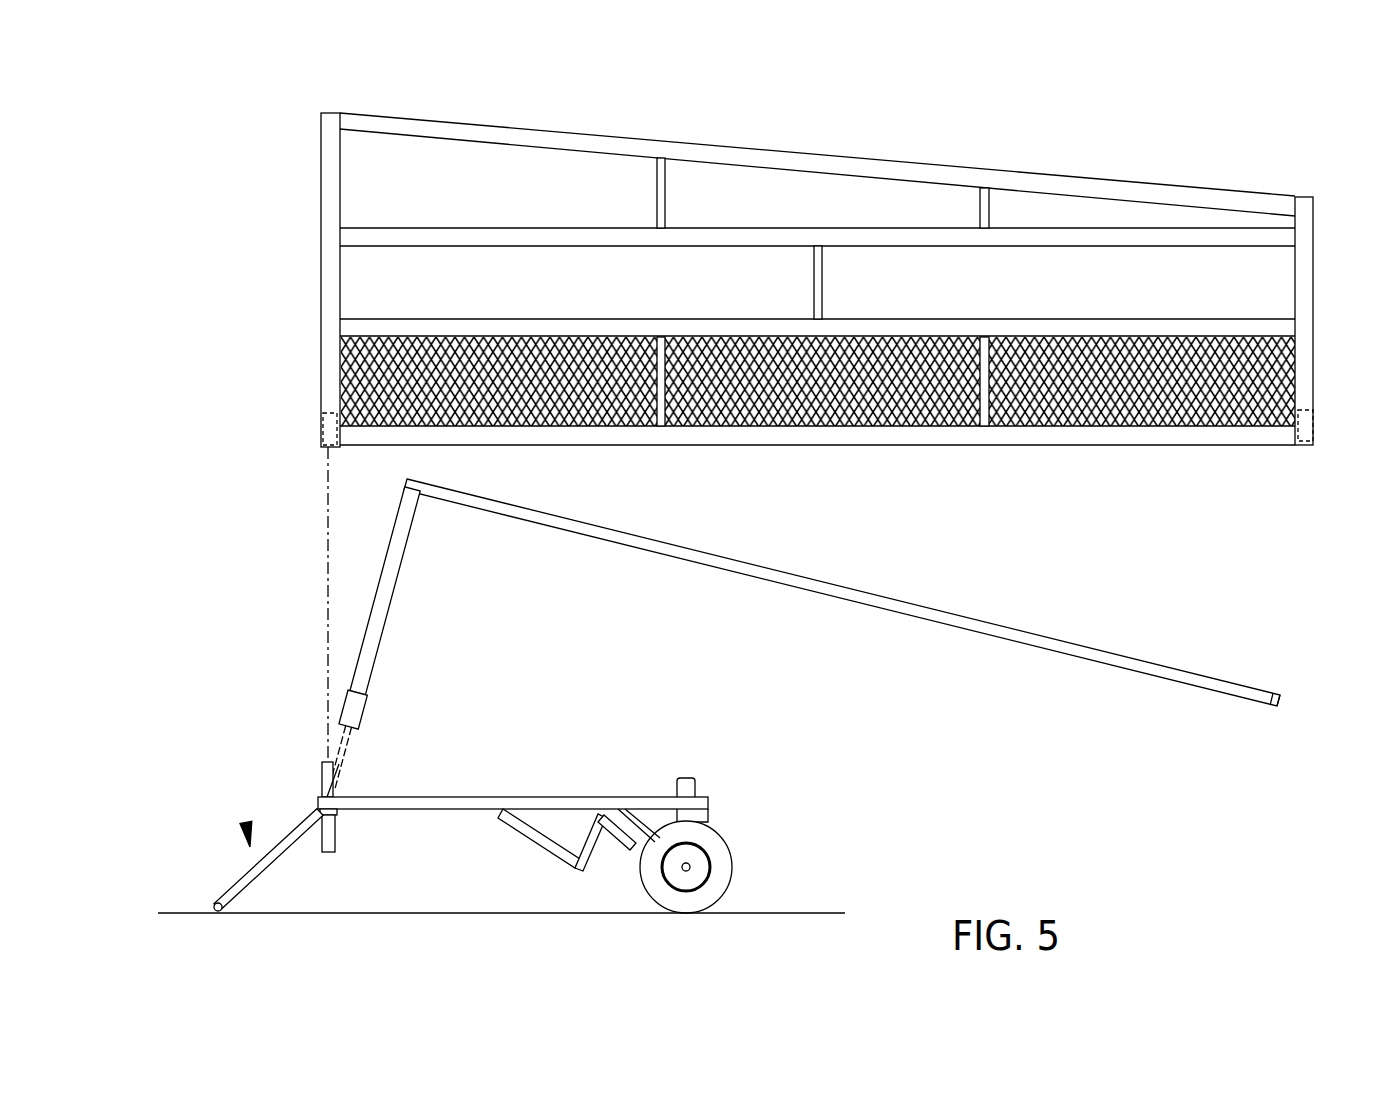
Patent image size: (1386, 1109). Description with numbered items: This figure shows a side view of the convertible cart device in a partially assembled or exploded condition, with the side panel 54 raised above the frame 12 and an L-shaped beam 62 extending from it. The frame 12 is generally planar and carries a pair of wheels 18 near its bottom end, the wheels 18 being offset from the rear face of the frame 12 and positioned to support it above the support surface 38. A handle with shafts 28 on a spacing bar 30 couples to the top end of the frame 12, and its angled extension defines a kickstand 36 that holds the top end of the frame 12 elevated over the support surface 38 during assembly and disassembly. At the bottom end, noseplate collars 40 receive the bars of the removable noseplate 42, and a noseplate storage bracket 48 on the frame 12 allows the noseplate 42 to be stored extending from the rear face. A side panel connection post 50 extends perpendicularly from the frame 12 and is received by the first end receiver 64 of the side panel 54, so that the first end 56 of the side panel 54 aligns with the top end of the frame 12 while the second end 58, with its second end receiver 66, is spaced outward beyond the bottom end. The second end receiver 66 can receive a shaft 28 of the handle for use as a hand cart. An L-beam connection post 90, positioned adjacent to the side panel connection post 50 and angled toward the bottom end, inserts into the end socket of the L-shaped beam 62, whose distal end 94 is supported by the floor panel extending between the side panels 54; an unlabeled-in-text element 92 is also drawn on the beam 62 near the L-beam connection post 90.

The frame 12 is at (562, 797).
The wheels 18 is at (733, 878).
The shafts 28 is at (340, 835).
The spacing bar 30 is at (265, 863).
The kickstand 36 is at (246, 825).
The support surface 38 is at (185, 912).
The noseplate collars 40 is at (707, 808).
The noseplate 42 is at (535, 842).
The noseplate storage bracket 48 is at (608, 870).
The side panel connection posts 50 is at (320, 771).
The side panels 54 is at (873, 162).
The first end 56 is at (321, 304).
The second end 58 is at (1314, 389).
The L-shaped beam 62 is at (850, 593).
The first end receiver 64 is at (322, 432).
The second end receiver 66 is at (1302, 448).
The L-beam connection posts 90 is at (338, 777).
The cylinder 92 is at (363, 712).
The distal end 94 is at (1282, 702).